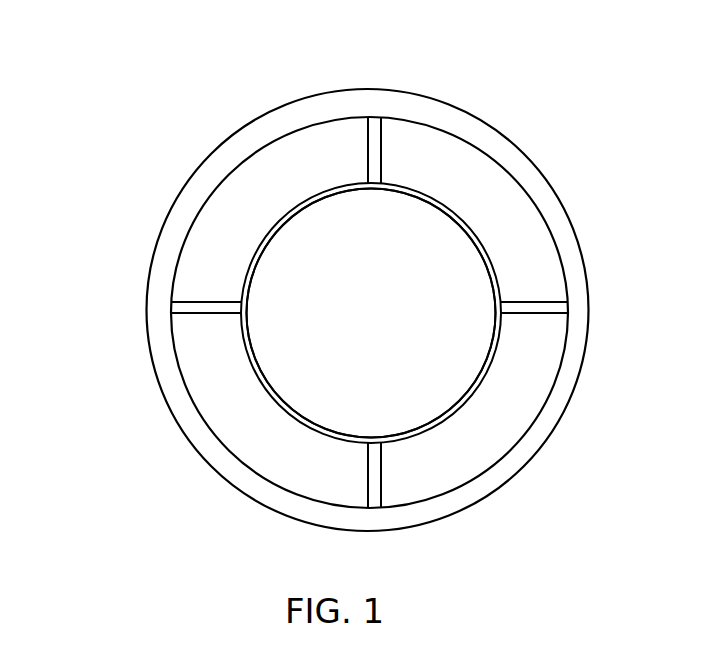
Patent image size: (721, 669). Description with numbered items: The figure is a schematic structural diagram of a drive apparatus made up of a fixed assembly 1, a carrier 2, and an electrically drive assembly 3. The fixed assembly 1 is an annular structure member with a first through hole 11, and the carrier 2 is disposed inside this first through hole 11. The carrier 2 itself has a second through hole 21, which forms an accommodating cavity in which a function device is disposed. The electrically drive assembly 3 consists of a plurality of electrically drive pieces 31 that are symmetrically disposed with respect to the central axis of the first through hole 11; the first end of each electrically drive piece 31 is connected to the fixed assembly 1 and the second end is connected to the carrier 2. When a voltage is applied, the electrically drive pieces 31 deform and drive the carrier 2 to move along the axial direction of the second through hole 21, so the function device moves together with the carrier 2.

The fixed assembly 1 is at (482, 125).
The first through hole 11 is at (495, 197).
The carrier 2 is at (487, 245).
The second through hole 21 is at (443, 383).
The electrically drive assembly 3 is at (55, 55).
The electrically drive piece 31 is at (366, 158).